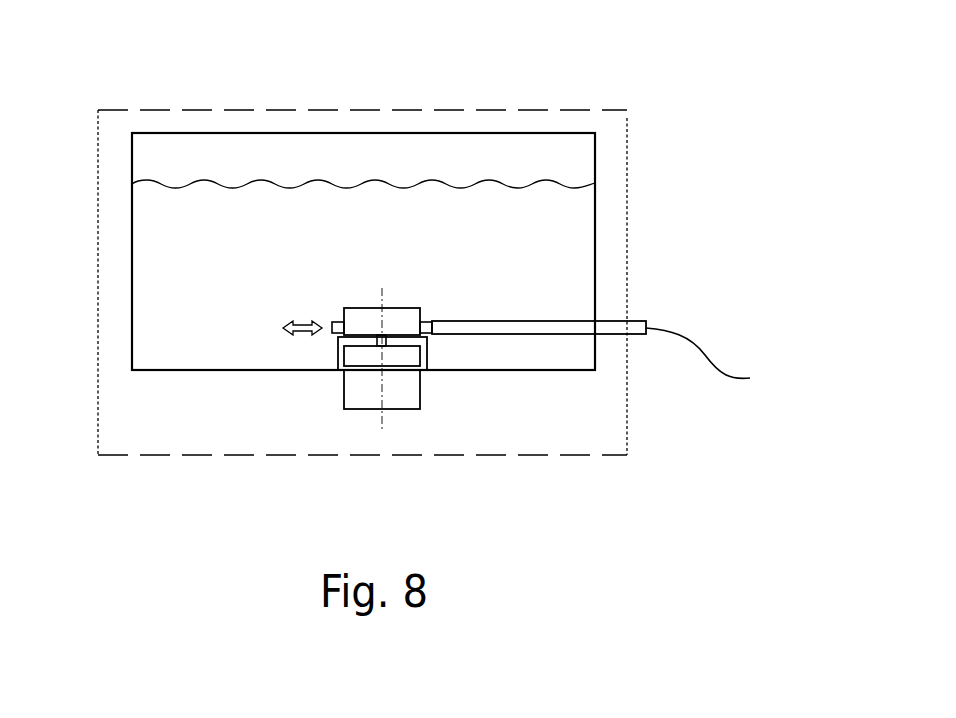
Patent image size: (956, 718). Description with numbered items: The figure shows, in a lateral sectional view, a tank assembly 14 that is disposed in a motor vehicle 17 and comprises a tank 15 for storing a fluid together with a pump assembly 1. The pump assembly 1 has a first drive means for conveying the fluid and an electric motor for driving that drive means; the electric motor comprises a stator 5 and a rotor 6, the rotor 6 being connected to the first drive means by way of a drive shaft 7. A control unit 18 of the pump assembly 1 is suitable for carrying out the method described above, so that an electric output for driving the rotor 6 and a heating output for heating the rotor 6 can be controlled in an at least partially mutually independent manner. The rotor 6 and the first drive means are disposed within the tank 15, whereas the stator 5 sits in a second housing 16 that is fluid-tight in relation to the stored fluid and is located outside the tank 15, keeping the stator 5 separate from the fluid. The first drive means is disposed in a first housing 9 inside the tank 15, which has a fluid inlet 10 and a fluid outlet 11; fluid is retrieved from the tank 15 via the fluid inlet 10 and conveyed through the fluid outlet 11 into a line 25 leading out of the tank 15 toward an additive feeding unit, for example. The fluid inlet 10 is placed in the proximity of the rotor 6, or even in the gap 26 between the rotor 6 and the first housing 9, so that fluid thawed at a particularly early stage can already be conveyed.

The pump assembly 1 is at (421, 289).
The stator 5 is at (403, 403).
The rotor 6 is at (427, 358).
The drive shaft 7 is at (378, 338).
The first housing 9 is at (420, 316).
The fluid inlet 10 is at (338, 320).
The fluid outlet 11 is at (650, 324).
The tank assembly 14 is at (491, 70).
The tank 15 is at (595, 186).
The second housing 16 is at (417, 394).
The motor vehicle 17 is at (523, 457).
The control unit 18 is at (358, 397).
The line 25 is at (697, 350).
The gap 26 is at (423, 338).